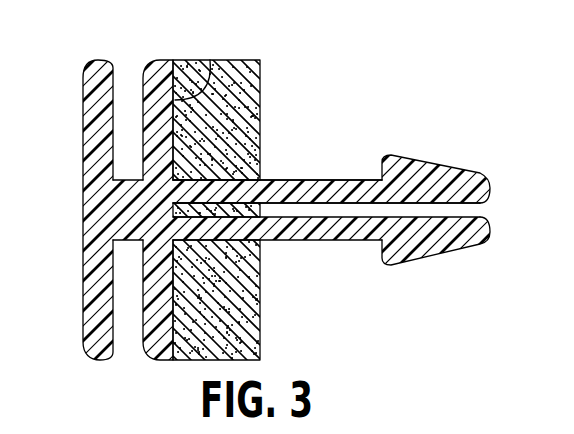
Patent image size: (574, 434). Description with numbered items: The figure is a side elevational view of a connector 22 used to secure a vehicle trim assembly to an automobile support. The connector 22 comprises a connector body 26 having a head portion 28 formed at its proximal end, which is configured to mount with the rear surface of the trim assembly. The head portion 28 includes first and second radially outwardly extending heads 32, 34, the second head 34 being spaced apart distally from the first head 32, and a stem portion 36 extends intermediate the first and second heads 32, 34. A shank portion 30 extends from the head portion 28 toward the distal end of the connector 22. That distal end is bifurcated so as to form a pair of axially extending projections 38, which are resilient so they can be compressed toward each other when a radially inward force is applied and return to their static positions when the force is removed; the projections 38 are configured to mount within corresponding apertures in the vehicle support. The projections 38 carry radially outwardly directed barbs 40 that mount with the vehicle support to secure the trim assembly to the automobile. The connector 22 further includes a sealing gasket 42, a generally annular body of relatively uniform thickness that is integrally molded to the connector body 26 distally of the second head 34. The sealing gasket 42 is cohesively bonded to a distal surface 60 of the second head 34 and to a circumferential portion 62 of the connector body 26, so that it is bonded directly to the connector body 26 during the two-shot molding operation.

The connector 22 is at (287, 186).
The connector body 26 is at (272, 172).
The head portion 28 is at (122, 60).
The shank portion 30 is at (340, 172).
The first head 32 is at (88, 63).
The second head 34 is at (162, 60).
The stem portion 36 is at (125, 243).
The axially extending projections 38 is at (377, 178).
The barbs 40 is at (393, 156).
The sealing gasket 42 is at (262, 98).
The distal surface 60 is at (210, 60).
The circumferential portion 62 is at (233, 254).